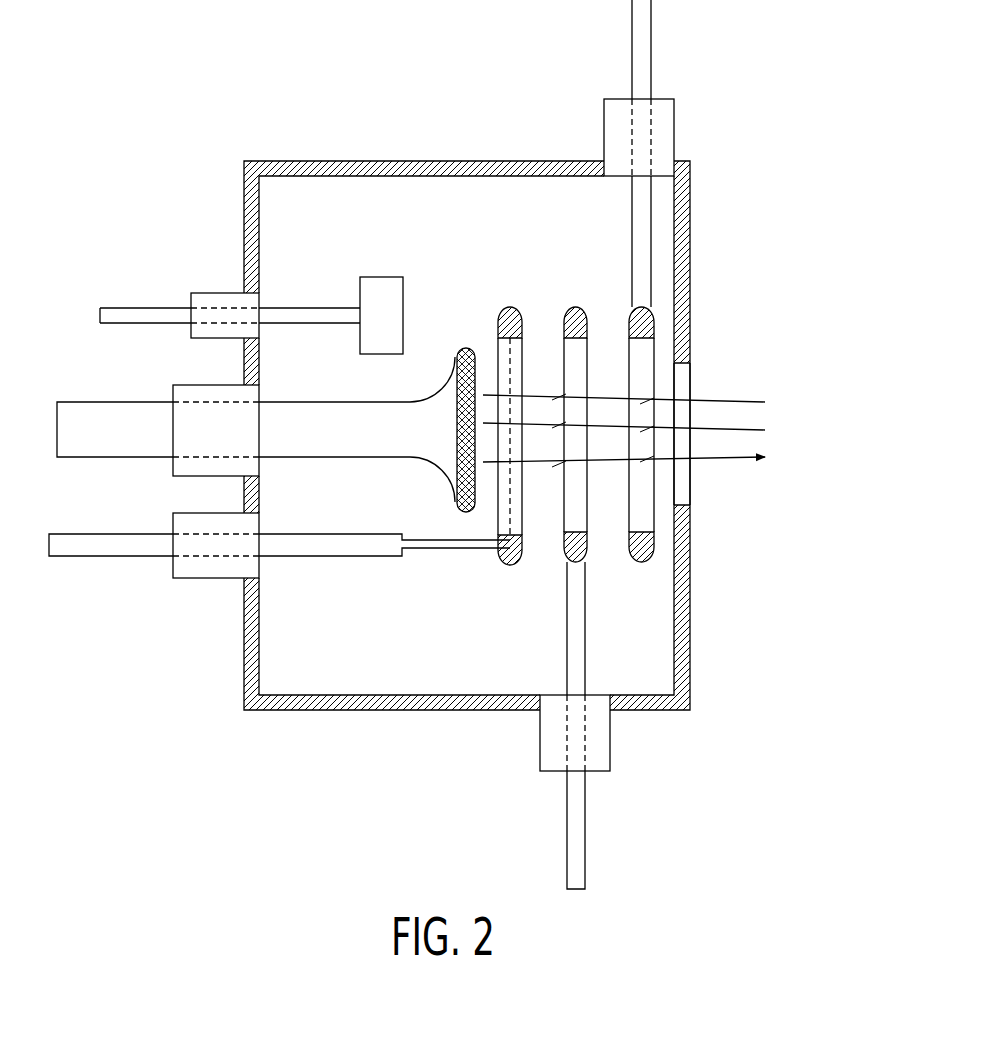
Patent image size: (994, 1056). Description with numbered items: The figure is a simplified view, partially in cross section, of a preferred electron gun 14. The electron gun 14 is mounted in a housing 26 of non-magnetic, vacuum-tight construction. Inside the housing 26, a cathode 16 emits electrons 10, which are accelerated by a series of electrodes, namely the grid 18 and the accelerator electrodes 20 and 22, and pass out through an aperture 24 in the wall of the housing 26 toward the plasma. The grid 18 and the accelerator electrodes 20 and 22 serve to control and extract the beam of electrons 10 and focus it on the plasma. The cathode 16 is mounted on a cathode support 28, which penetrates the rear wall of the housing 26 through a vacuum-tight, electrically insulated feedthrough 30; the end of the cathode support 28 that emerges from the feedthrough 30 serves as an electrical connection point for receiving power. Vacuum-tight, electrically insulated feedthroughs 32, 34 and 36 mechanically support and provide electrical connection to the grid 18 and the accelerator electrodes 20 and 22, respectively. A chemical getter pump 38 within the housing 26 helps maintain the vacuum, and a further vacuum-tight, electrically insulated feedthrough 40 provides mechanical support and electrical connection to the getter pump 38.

The electrons 10 is at (758, 471).
The electron gun 14 is at (212, 31).
The cathode 16 is at (469, 518).
The grid 18 is at (509, 302).
The accelerator electrode 20 is at (584, 312).
The accelerator electrode 22 is at (651, 317).
The aperture 24 is at (691, 371).
The housing 26 is at (358, 713).
The cathode support 28 is at (417, 441).
The feedthrough 30 is at (196, 417).
The feedthrough 32 is at (218, 578).
The feedthrough 34 is at (601, 741).
The feedthrough 36 is at (671, 128).
The chemical getter pump 38 is at (383, 290).
The feedthrough 40 is at (215, 297).